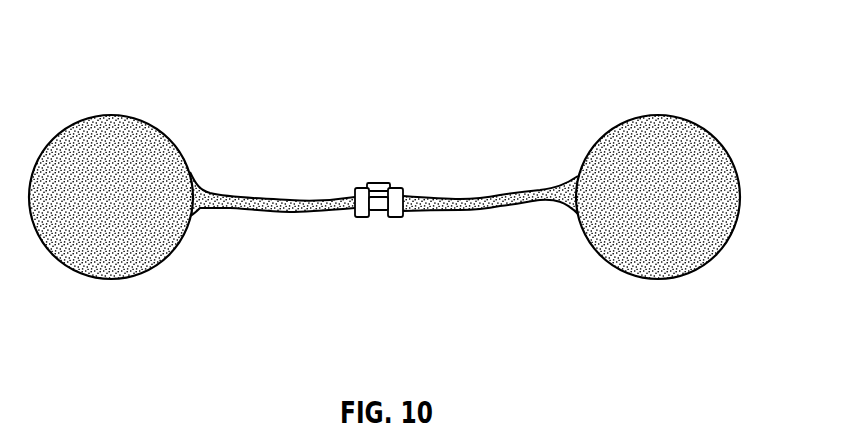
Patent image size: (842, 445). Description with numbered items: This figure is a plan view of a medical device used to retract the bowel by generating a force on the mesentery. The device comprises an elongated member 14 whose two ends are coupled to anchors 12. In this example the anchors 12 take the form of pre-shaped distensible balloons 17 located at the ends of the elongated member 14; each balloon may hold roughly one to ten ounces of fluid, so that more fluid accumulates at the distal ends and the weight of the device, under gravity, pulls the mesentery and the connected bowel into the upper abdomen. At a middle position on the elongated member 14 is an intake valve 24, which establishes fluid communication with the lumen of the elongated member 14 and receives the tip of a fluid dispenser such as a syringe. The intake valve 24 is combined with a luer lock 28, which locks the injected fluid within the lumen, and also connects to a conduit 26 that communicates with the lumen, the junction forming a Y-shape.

The anchor 12 is at (642, 138).
The elongated member 14 is at (460, 197).
The distensible balloon 17 is at (675, 203).
The intake valve 24 is at (378, 182).
The conduit 26 is at (382, 217).
The luer lock 28 is at (362, 217).